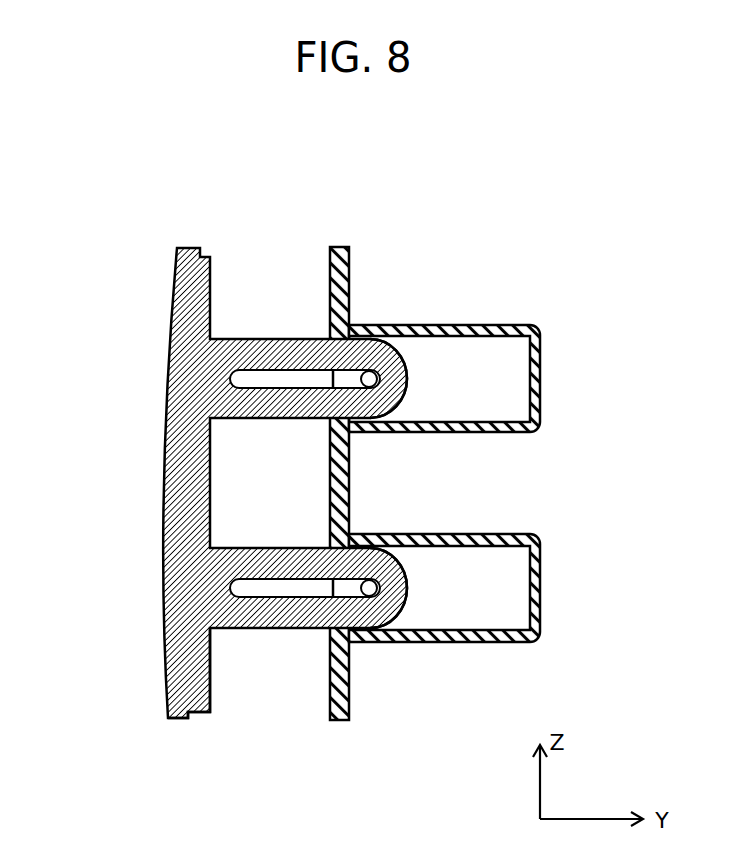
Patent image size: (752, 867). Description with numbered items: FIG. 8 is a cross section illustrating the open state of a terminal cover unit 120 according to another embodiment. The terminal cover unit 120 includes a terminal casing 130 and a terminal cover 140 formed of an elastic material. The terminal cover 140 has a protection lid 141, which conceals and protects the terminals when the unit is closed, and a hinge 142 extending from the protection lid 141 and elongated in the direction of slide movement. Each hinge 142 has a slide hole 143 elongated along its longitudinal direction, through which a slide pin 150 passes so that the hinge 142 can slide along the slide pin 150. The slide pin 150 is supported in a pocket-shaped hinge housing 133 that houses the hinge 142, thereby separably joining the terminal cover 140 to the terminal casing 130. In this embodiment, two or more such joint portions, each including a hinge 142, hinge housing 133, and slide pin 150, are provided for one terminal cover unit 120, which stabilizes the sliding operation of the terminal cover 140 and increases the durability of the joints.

The terminal cover unit 120 is at (96, 203).
The terminal casing 130 is at (349, 703).
The hinge housing 133 is at (540, 397).
The terminal cover 140 is at (168, 367).
The protection lid 141 is at (183, 642).
The hinge 142 is at (407, 366).
The slide hole 143 is at (272, 376).
The slide pin 150 is at (370, 371).